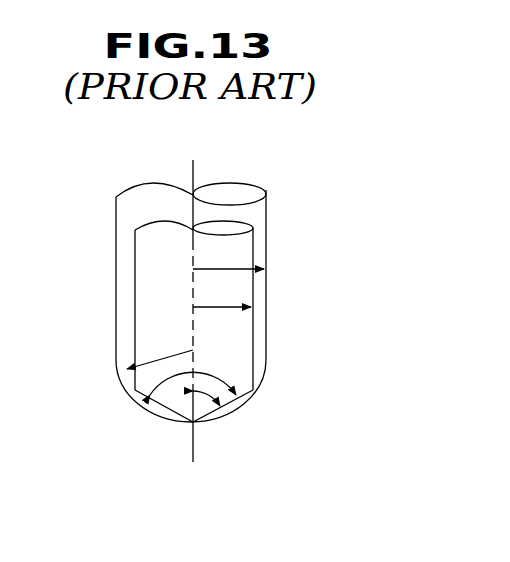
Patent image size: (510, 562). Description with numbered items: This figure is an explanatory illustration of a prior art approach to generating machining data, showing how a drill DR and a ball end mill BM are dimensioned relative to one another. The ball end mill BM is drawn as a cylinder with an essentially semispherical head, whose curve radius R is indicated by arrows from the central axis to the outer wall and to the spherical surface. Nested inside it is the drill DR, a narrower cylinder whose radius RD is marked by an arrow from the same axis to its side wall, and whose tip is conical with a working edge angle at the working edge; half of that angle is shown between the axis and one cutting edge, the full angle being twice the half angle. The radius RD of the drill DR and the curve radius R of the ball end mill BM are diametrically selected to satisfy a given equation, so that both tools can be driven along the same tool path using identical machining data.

The ball end mill BM is at (267, 204).
The drill DR is at (253, 333).
The curve radius R is at (222, 267).
The radius of the drill RD is at (226, 309).